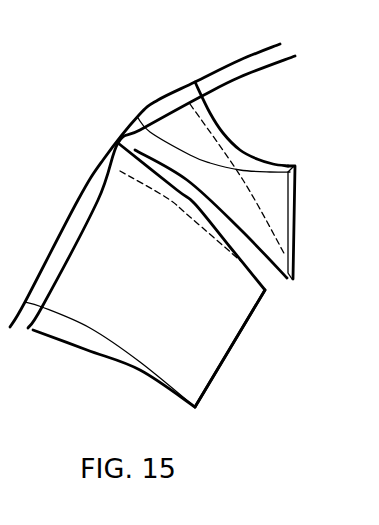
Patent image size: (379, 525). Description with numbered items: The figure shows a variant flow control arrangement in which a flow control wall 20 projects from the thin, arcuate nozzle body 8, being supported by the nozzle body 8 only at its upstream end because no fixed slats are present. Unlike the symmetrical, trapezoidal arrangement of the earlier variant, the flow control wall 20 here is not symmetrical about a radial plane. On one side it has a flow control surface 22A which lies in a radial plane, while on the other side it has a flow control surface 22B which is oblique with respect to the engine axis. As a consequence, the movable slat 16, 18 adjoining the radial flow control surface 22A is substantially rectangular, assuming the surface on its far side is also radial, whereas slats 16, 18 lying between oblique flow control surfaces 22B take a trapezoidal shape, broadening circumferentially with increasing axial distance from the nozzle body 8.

The nozzle body 8 is at (144, 98).
The movable slat 16 is at (202, 367).
The movable slat 18 is at (202, 367).
The flow control wall 20 is at (293, 187).
The flow control surface 22A is at (275, 207).
The flow control surface 22B is at (293, 151).